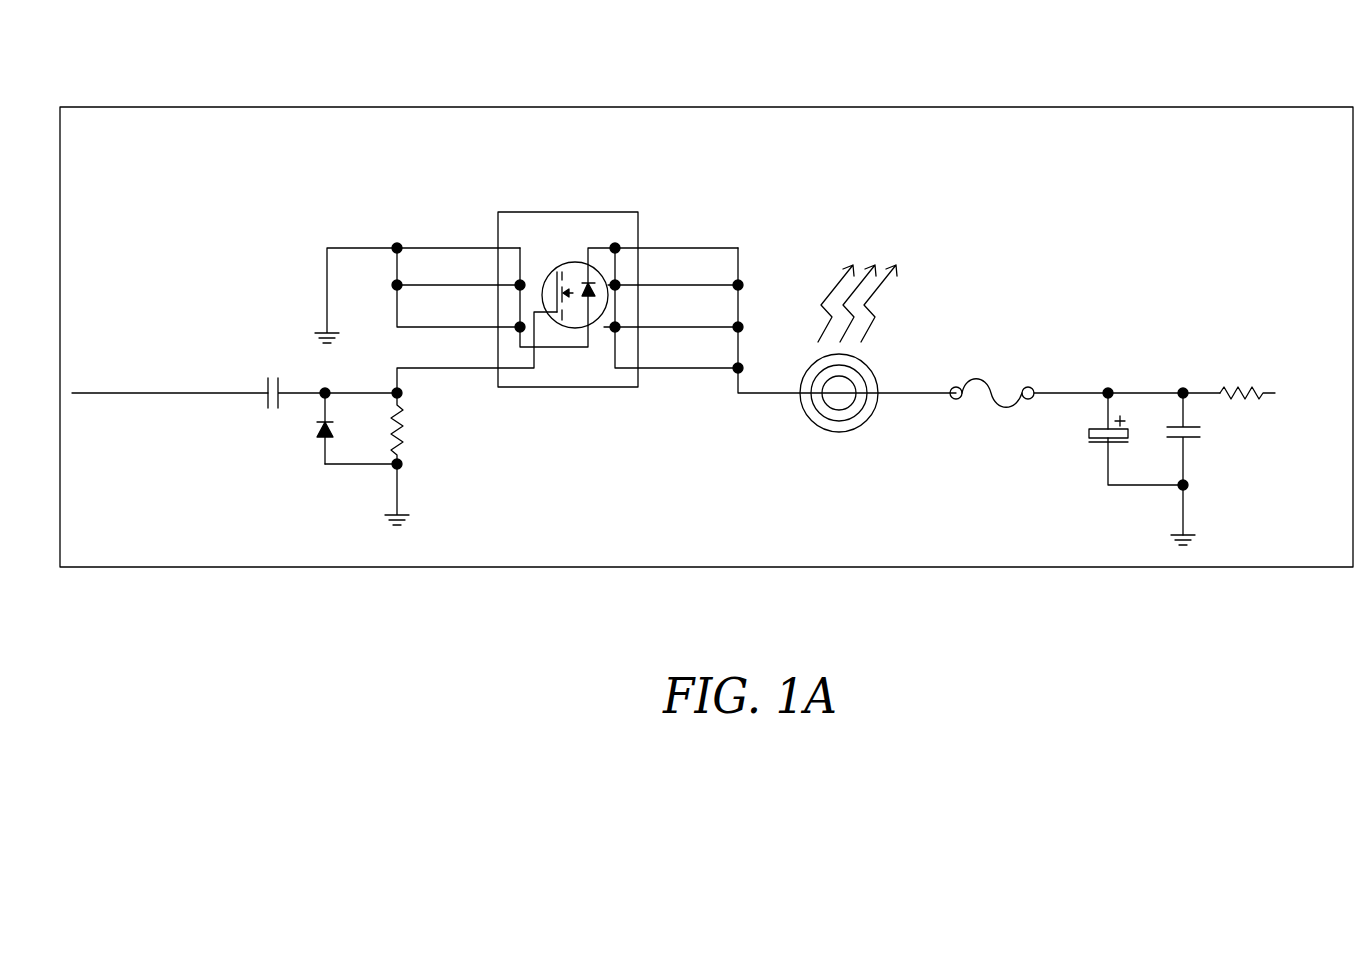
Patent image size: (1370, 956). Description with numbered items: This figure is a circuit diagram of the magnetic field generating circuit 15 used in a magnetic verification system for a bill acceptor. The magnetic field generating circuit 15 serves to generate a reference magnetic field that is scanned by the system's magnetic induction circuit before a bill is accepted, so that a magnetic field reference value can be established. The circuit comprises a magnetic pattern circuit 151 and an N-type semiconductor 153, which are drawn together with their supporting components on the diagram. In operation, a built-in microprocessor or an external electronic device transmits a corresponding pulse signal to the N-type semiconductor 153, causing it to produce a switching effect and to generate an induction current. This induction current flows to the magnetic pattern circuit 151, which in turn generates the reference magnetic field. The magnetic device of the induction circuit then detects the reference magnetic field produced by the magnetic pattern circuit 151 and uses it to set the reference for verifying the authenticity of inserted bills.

The magnetic field generating circuit 15 is at (820, 107).
The magnetic pattern circuit 151 is at (829, 422).
The N-type semiconductor 153 is at (600, 212).